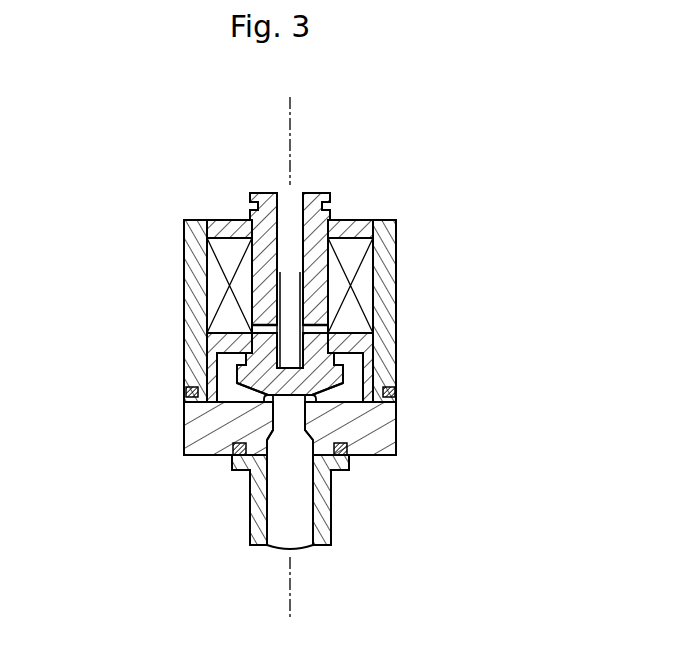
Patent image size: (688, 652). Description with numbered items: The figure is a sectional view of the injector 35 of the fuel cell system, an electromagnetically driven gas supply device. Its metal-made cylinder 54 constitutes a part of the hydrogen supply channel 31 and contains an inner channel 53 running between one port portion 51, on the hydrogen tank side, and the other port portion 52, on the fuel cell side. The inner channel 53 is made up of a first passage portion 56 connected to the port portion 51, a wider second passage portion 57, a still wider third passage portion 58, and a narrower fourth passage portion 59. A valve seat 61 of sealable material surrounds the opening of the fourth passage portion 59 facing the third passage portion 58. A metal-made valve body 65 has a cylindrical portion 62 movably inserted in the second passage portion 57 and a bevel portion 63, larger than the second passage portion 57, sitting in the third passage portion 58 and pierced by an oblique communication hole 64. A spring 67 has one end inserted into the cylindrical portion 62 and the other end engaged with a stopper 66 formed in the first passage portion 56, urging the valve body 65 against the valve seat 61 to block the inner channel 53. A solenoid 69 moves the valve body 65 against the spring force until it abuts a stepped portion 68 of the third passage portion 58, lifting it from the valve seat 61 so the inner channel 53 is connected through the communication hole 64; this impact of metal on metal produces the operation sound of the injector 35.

The hydrogen supply channel 31 is at (289, 146).
The injector 35 is at (295, 329).
The port portion 51 is at (277, 192).
The port portion 52 is at (268, 470).
The inner channel 53 is at (185, 455).
The cylinder 54 is at (400, 325).
The first passage portion 56 is at (298, 216).
The second passage portion 57 is at (255, 341).
The third passage portion 58 is at (236, 369).
The fourth passage portion 59 is at (350, 445).
The valve seat 61 is at (286, 410).
The cylindrical portion 62 is at (330, 346).
The bevel portion 63 is at (344, 372).
The communication hole 64 is at (330, 390).
The valve body 65 is at (238, 392).
The stopper 66 is at (345, 290).
The spring 67 is at (275, 322).
The stepped portion 68 is at (235, 367).
The solenoid 69 is at (352, 246).